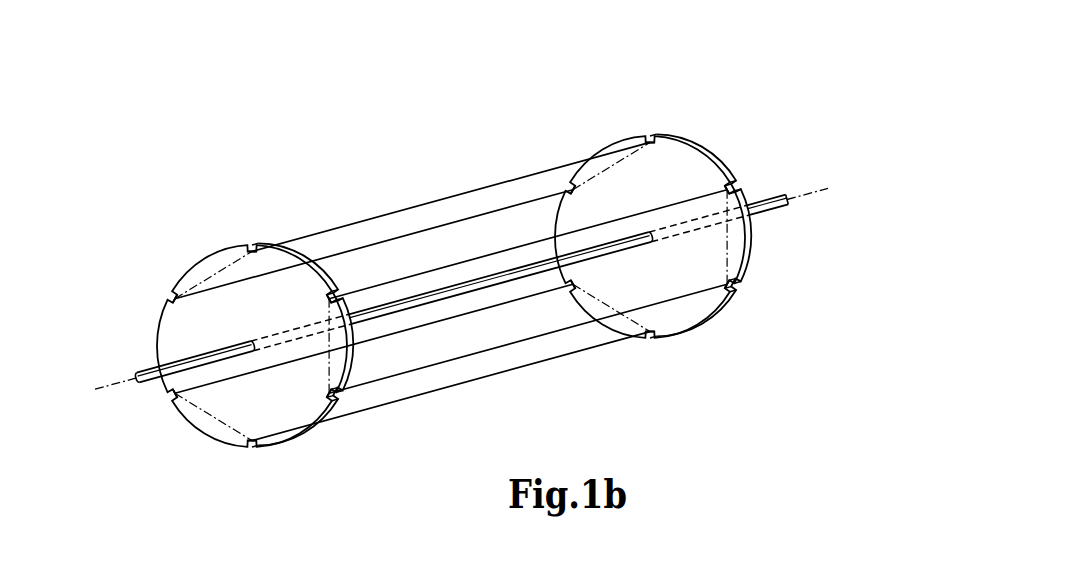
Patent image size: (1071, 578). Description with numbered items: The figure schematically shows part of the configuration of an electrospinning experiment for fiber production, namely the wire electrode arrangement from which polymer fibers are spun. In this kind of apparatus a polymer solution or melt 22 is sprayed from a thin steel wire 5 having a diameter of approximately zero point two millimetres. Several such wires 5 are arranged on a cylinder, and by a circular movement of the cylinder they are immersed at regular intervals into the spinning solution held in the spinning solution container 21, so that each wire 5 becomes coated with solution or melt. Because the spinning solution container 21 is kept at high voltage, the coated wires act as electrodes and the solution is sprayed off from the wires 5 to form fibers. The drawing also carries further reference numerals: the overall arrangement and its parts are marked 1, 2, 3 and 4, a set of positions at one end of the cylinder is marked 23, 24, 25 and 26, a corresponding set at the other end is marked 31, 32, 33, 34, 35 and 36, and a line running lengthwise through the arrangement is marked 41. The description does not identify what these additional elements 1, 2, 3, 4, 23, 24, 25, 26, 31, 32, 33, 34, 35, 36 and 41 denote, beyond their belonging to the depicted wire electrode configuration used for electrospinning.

The rotor assembly 1 is at (381, 177).
The second end disc 2 is at (735, 247).
The first end disc 3 is at (219, 260).
The shaft 4 is at (428, 298).
The thin steel wire 5 is at (492, 179).
The spinning solution container 21 is at (652, 134).
The polymer solution or melt 22 is at (563, 188).
The notch of second end disc 23 is at (571, 286).
The notch of second end disc 24 is at (648, 334).
The notch of second end disc 25 is at (732, 288).
The notch of second end disc 26 is at (735, 184).
The notch of first end disc 31 is at (252, 246).
The notch of first end disc 32 is at (176, 297).
The notch of first end disc 33 is at (178, 400).
The notch of first end disc 34 is at (253, 450).
The notch of first end disc 35 is at (336, 401).
The notch of first end disc 36 is at (334, 292).
The axis of rotation 41 is at (97, 386).